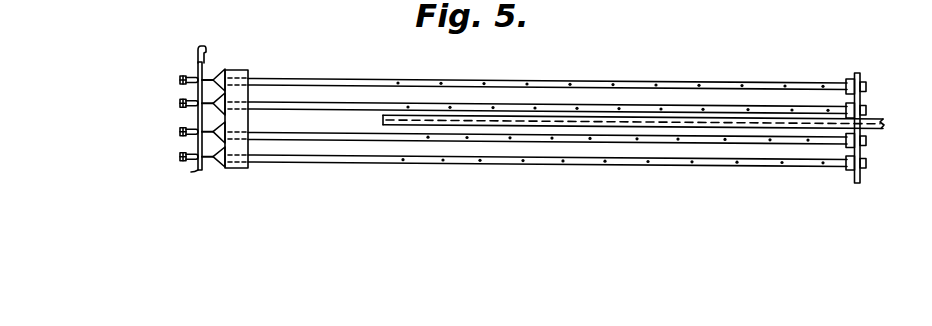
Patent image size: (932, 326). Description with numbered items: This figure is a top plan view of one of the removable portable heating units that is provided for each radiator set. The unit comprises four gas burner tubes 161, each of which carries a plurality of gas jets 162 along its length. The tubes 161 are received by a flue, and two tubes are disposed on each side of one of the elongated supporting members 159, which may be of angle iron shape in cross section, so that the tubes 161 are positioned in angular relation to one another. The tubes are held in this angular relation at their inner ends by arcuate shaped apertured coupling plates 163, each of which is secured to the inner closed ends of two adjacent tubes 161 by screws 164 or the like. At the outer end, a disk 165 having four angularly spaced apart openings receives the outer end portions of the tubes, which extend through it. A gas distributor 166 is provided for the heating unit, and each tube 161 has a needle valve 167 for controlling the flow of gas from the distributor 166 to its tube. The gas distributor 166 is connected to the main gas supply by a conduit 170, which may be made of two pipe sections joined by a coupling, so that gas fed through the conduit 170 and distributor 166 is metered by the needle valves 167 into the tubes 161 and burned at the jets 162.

The elongated supporting member 159 is at (625, 128).
The gas burner tube 161 is at (290, 156).
The gas jet 162 is at (413, 108).
The arcuate shaped apertured coupling plate 163 is at (856, 73).
The screw 164 is at (866, 111).
The disk 165 is at (243, 166).
The gas distributor 166 is at (197, 172).
The needle valve 167 is at (180, 157).
The conduit 170 is at (197, 55).